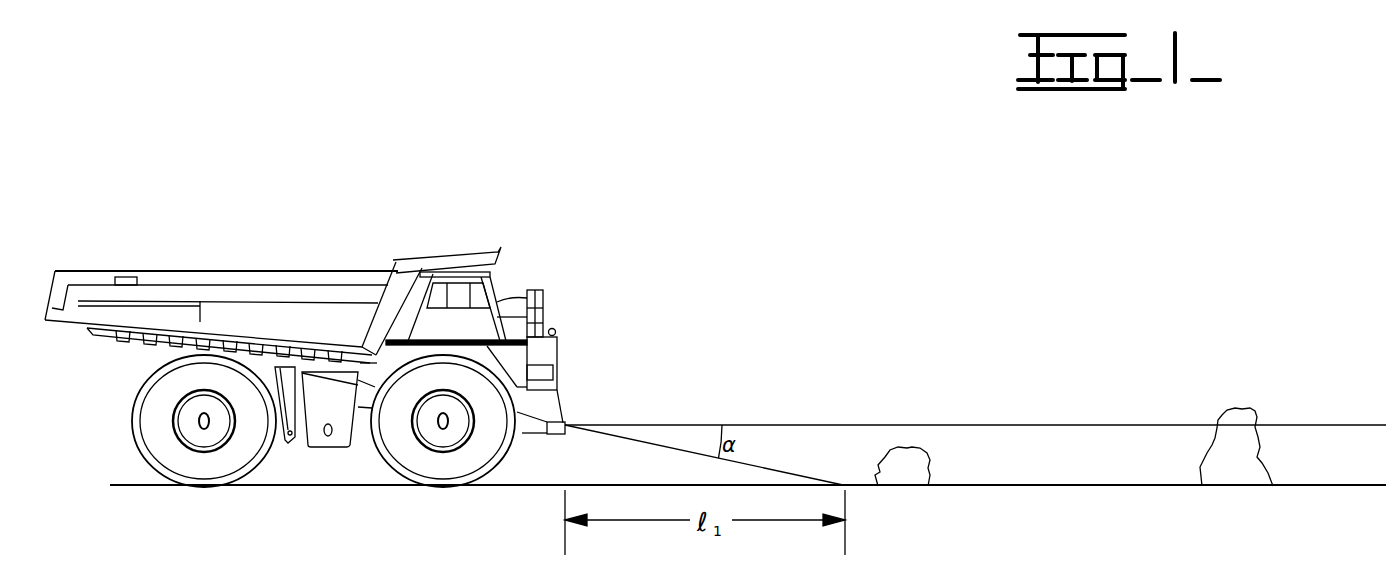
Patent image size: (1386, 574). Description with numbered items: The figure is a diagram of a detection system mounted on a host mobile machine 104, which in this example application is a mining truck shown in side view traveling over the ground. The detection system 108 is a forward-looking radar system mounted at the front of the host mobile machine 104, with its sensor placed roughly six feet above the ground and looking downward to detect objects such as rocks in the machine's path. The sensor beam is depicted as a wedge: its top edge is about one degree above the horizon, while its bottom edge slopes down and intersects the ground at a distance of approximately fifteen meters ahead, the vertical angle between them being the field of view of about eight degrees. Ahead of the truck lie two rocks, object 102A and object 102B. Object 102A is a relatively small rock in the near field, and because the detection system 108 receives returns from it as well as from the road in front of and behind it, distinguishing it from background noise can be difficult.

The host mobile machine 104 is at (323, 212).
The detection system 108 is at (565, 425).
The object 102A is at (903, 447).
The object 102B is at (1242, 408).